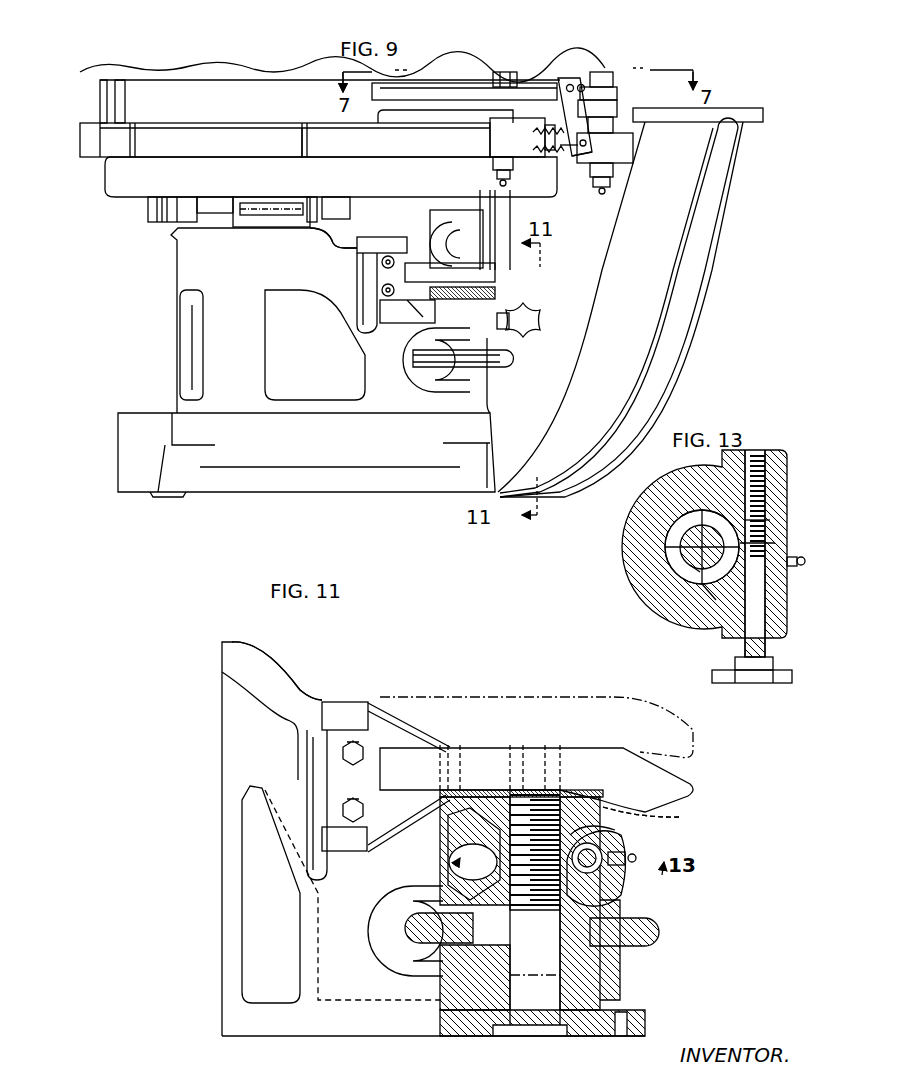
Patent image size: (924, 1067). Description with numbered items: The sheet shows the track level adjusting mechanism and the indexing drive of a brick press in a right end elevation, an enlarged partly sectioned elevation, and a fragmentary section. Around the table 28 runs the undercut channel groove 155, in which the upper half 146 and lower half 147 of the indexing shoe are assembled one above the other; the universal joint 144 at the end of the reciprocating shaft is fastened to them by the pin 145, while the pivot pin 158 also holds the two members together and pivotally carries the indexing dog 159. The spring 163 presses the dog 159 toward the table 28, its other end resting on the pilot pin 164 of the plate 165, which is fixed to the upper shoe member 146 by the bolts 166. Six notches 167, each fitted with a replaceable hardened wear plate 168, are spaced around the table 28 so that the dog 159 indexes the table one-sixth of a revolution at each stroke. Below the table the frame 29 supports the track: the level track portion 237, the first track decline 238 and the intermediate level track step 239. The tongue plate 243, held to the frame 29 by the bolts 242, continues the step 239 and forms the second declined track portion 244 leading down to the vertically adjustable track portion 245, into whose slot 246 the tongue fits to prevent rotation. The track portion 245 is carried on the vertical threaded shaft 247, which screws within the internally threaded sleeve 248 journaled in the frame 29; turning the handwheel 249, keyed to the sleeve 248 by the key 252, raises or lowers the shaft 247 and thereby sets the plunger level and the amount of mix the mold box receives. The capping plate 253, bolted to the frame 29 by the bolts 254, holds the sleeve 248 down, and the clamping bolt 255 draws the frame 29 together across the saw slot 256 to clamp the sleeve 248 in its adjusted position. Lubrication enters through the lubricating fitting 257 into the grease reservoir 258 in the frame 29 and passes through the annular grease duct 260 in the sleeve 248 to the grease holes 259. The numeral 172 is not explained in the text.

In FIG. 9, the table 28 is at (95, 76).
In FIG. 9, the frame 29 is at (700, 291).
In FIG. 13, the frame 29 is at (662, 487).
In FIG. 11, the frame 29 is at (350, 1036).
In FIG. 9, the universal joint 144 is at (632, 168).
In FIG. 9, the pin 145 is at (601, 72).
In FIG. 9, the upper half of indexing shoe 146 is at (373, 94).
In FIG. 9, the lower half of indexing shoe 147 is at (388, 111).
In FIG. 9, the undercut channel groove 155 is at (210, 94).
In FIG. 9, the pivot pin 158 is at (507, 74).
In FIG. 9, the indexing dog 159 is at (500, 138).
In FIG. 9, the spring 163 is at (553, 150).
In FIG. 9, the pilot pin 164 is at (568, 162).
In FIG. 9, the plate 165 is at (574, 108).
In FIG. 9, the bolts 166 is at (577, 82).
In FIG. 9, the notches 167 is at (276, 138).
In FIG. 9, the hardened wear plate 168 is at (297, 150).
In FIG. 9, the carriage block 172 is at (110, 180).
In FIG. 9, the level track portion 237 is at (227, 222).
In FIG. 9, the first track decline 238 is at (333, 239).
In FIG. 11, the first track decline 238 is at (265, 660).
In FIG. 9, the intermediate level track step 239 is at (355, 250).
In FIG. 11, the intermediate level track step 239 is at (347, 700).
In FIG. 9, the bolts 242 is at (383, 290).
In FIG. 11, the bolts 242 is at (342, 810).
In FIG. 9, the tongue plate 243 is at (430, 313).
In FIG. 11, the tongue plate 243 is at (385, 730).
In FIG. 9, the second declined track portion 244 is at (447, 239).
In FIG. 11, the second declined track portion 244 is at (413, 737).
In FIG. 9, the vertically adjustable track portion 245 is at (470, 279).
In FIG. 11, the vertically adjustable track portion 245 is at (590, 694).
In FIG. 11, the slot 246 is at (497, 697).
In FIG. 13, the vertical threaded shaft 247 is at (690, 535).
In FIG. 11, the vertical threaded shaft 247 is at (600, 830).
In FIG. 13, the internally threaded sleeve 248 is at (715, 590).
In FIG. 11, the internally threaded sleeve 248 is at (603, 900).
In FIG. 9, the handwheel 249 is at (517, 358).
In FIG. 11, the handwheel 249 is at (660, 940).
In FIG. 11, the key 252 is at (503, 940).
In FIG. 11, the capping plate 253 is at (386, 823).
In FIG. 11, the bolts 254 is at (663, 819).
In FIG. 9, the clamping bolt 255 is at (538, 318).
In FIG. 13, the clamping bolt 255 is at (758, 683).
In FIG. 11, the clamping bolt 255 is at (610, 880).
In FIG. 13, the saw slot 256 is at (775, 543).
In FIG. 13, the lubricating fitting 257 is at (797, 567).
In FIG. 11, the lubricating fitting 257 is at (650, 858).
In FIG. 13, the grease reservoir 258 is at (770, 520).
In FIG. 11, the grease reservoir 258 is at (600, 856).
In FIG. 13, the grease holes 259 is at (680, 575).
In FIG. 11, the grease holes 259 is at (460, 884).
In FIG. 13, the annular grease duct 260 is at (690, 580).
In FIG. 11, the annular grease duct 260 is at (445, 850).